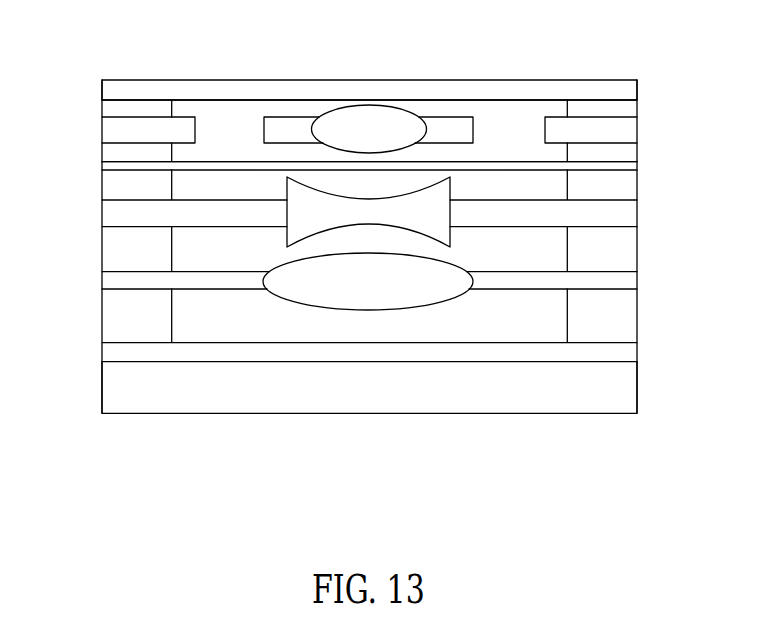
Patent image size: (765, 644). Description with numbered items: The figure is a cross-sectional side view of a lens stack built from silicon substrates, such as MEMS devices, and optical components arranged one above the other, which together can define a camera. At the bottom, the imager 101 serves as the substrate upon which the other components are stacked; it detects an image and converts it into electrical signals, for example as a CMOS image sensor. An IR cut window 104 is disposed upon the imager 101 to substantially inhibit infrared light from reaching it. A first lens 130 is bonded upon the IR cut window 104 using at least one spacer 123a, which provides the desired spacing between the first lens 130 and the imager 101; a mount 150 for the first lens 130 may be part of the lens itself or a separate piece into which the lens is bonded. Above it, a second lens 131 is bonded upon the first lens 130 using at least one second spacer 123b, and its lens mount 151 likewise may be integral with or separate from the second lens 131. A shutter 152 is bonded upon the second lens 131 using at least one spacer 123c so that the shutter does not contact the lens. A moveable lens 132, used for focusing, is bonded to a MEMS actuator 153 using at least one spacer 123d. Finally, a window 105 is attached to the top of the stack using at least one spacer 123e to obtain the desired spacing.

The imager 101 is at (102, 398).
The IR cut window 104 is at (102, 355).
The window 105 is at (102, 80).
The spacer 123a is at (102, 318).
The second spacer 123b is at (102, 258).
The spacer 123c is at (102, 188).
The spacer 123d is at (102, 154).
The spacer 123e is at (102, 110).
The first lens 130 is at (392, 308).
The second lens 131 is at (377, 199).
The moveable lens 132 is at (383, 105).
The mount 150 is at (637, 278).
The lens mount 151 is at (637, 214).
The shutter 152 is at (637, 153).
The MEMS actuator 153 is at (637, 123).